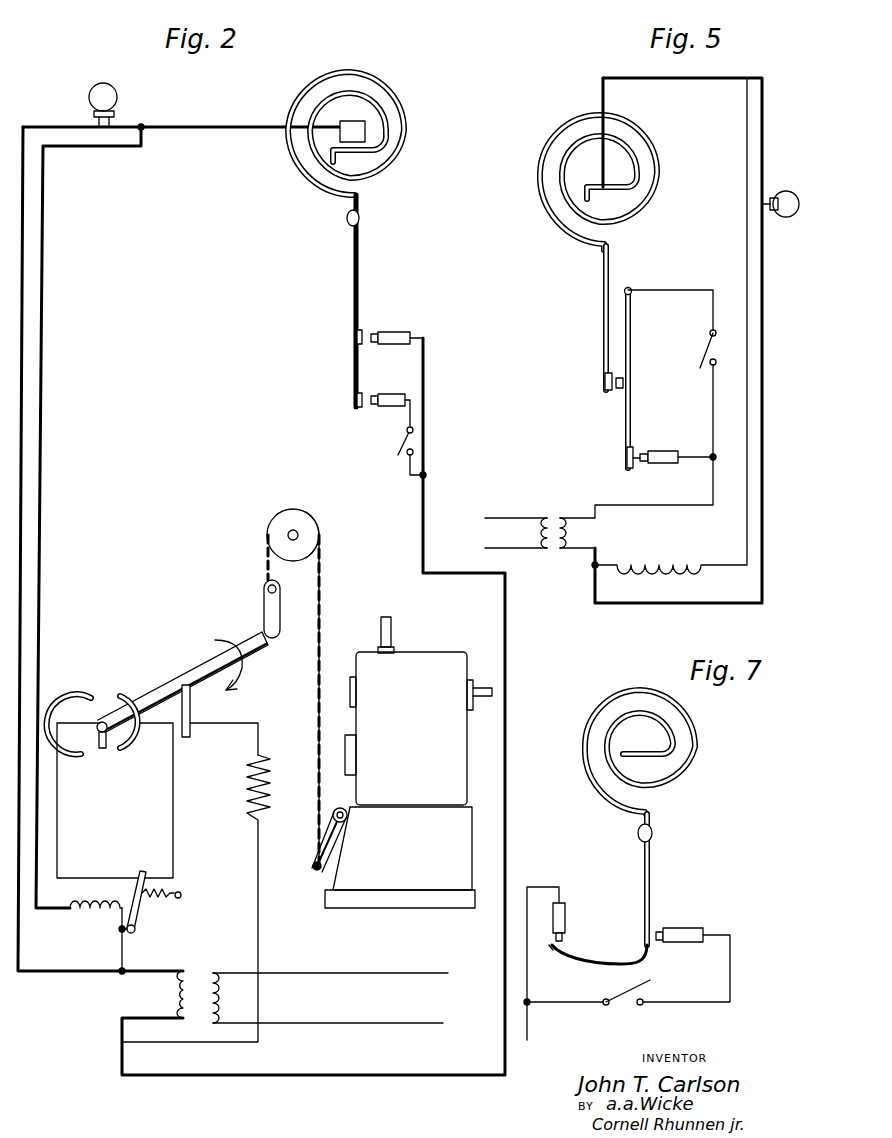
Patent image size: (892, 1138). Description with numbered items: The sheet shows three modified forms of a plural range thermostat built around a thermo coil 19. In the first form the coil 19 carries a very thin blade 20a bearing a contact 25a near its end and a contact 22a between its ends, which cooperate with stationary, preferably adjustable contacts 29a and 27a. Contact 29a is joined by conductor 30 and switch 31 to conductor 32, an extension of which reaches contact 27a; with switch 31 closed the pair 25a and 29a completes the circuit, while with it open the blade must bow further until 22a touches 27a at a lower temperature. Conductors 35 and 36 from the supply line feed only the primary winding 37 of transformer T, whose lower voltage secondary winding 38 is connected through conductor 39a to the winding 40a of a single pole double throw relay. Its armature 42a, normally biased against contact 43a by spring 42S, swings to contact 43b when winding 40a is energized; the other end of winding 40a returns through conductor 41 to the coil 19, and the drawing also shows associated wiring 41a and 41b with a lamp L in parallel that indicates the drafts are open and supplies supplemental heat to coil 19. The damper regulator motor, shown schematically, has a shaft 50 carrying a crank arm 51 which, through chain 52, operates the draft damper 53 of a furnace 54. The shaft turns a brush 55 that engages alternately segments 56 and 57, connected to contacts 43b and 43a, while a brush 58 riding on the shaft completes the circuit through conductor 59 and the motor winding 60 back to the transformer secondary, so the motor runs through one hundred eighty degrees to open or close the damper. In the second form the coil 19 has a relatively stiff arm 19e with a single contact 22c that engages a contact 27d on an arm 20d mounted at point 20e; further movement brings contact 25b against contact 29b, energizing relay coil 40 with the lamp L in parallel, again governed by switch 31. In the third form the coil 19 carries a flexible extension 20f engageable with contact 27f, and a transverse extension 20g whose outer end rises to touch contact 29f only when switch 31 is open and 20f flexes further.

In FIG. 2, the thermo coil 19 is at (408, 115).
In FIG. 5, the thermo coil 19 is at (648, 198).
In FIG. 7, the thermo coil 19 is at (698, 745).
In FIG. 2, the conductor to lamp 41b is at (128, 127).
In FIG. 2, the conductor 41a is at (21, 538).
In FIG. 2, the conductor 41 is at (40, 578).
In FIG. 2, the lamp L is at (103, 105).
In FIG. 5, the lamp L is at (697, 340).
In FIG. 2, the blade 20a is at (361, 268).
In FIG. 2, the contact 22a is at (362, 338).
In FIG. 2, the contact 25a is at (359, 410).
In FIG. 2, the stationary contact 27a is at (400, 338).
In FIG. 2, the stationary contact 29a is at (385, 395).
In FIG. 2, the conductor 30 is at (412, 420).
In FIG. 2, the switch 31 is at (414, 445).
In FIG. 5, the switch 31 is at (699, 352).
In FIG. 7, the switch 31 is at (622, 1005).
In FIG. 2, the conductor 32 is at (425, 465).
In FIG. 2, the chain 52 is at (268, 548).
In FIG. 2, the draft damper 53 is at (345, 845).
In FIG. 2, the crank arm 51 is at (264, 601).
In FIG. 2, the shaft 50 is at (203, 668).
In FIG. 2, the segment 56 is at (94, 700).
In FIG. 2, the segment 57 is at (128, 692).
In FIG. 2, the contact arm or brush 55 is at (98, 750).
In FIG. 2, the brush 58 is at (192, 712).
In FIG. 2, the conductor 59 is at (238, 726).
In FIG. 2, the motor winding 60 is at (268, 762).
In FIG. 2, the furnace 54 is at (408, 762).
In FIG. 2, the contact 43b is at (130, 873).
In FIG. 2, the contact 43a is at (156, 881).
In FIG. 2, the armature 42a is at (145, 906).
In FIG. 2, the spring 42S is at (170, 890).
In FIG. 2, the conductor 39a is at (124, 955).
In FIG. 2, the relay winding 40a is at (90, 915).
In FIG. 2, the transformer T is at (202, 962).
In FIG. 5, the transformer T is at (558, 510).
In FIG. 2, the secondary winding 38 is at (180, 989).
In FIG. 2, the primary winding 37 is at (218, 996).
In FIG. 2, the conductor 36 is at (378, 973).
In FIG. 5, the conductor 36 is at (535, 516).
In FIG. 2, the conductor 35 is at (372, 1023).
In FIG. 5, the conductor 35 is at (528, 548).
In FIG. 5, the arm 19e is at (603, 332).
In FIG. 5, the contact 22c is at (605, 386).
In FIG. 5, the arm 20d is at (632, 336).
In FIG. 5, the contact 27d is at (619, 394).
In FIG. 5, the contact 25b is at (632, 470).
In FIG. 5, the mounting point 20e is at (628, 290).
In FIG. 5, the contact 29b is at (664, 452).
In FIG. 5, the relay coil 40 is at (660, 556).
In FIG. 7, the extension 20f is at (652, 879).
In FIG. 7, the transverse extension 20g is at (600, 955).
In FIG. 7, the contact 27f is at (683, 930).
In FIG. 7, the contact 29f is at (567, 912).